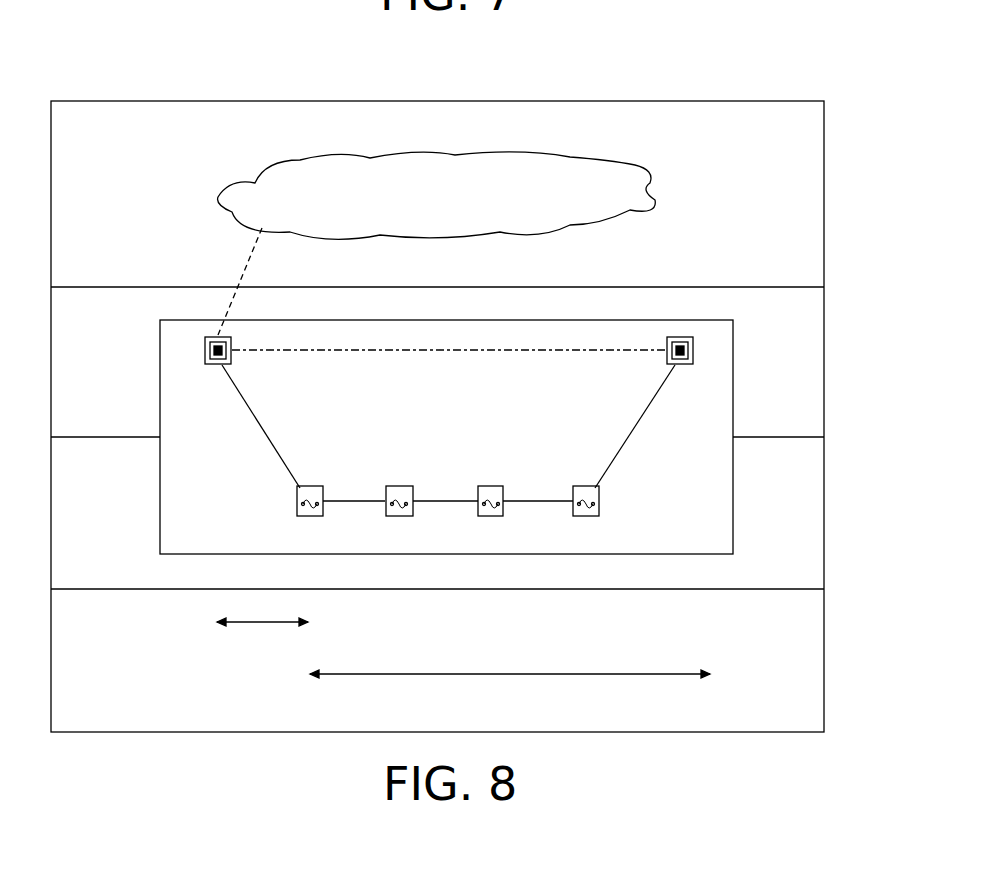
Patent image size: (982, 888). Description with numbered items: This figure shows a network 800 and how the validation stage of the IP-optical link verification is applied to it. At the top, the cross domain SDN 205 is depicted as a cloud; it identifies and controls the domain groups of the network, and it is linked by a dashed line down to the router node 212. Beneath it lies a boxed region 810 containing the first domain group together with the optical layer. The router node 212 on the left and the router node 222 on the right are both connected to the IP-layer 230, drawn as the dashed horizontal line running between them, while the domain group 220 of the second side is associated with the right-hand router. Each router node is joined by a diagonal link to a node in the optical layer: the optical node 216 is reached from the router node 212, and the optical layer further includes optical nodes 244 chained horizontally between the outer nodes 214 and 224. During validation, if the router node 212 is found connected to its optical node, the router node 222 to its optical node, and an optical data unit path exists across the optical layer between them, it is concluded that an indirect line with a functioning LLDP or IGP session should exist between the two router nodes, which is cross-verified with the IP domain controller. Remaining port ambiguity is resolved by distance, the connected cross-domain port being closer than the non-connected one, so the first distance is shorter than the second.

The network system 800 is at (181, 90).
The cross domain SDN 205 is at (630, 163).
The domain group / optical layer 810 is at (735, 402).
The router node 212 is at (205, 350).
The router node 222 is at (693, 347).
The first optical node 214 is at (297, 508).
The second optical node 224 is at (600, 510).
The optical nodes 244 is at (398, 487).
The optical node 216 is at (250, 423).
The domain group 2 220 is at (645, 427).
The IP-layer 230 is at (560, 352).